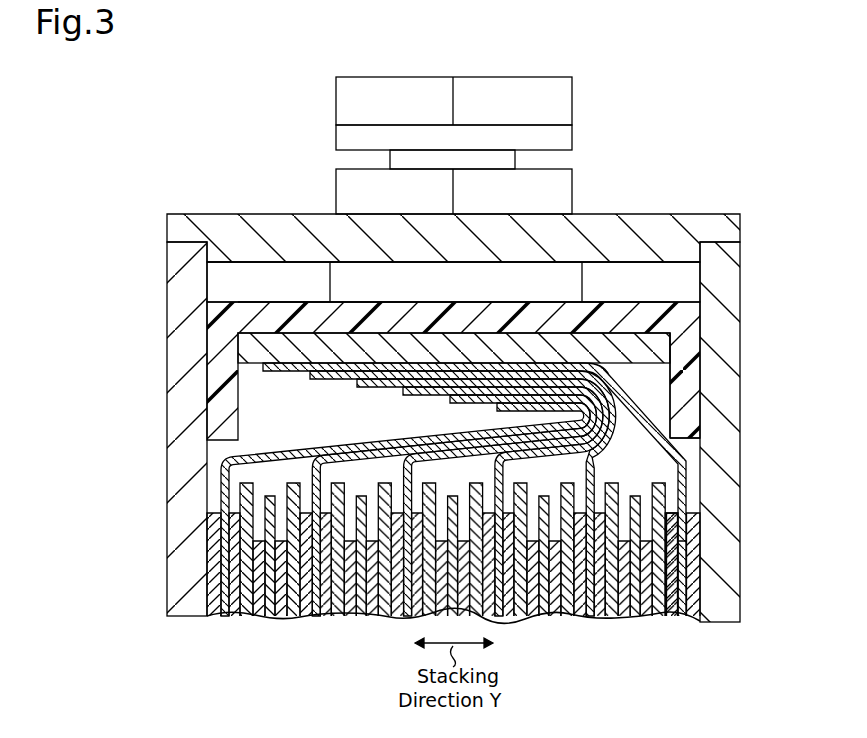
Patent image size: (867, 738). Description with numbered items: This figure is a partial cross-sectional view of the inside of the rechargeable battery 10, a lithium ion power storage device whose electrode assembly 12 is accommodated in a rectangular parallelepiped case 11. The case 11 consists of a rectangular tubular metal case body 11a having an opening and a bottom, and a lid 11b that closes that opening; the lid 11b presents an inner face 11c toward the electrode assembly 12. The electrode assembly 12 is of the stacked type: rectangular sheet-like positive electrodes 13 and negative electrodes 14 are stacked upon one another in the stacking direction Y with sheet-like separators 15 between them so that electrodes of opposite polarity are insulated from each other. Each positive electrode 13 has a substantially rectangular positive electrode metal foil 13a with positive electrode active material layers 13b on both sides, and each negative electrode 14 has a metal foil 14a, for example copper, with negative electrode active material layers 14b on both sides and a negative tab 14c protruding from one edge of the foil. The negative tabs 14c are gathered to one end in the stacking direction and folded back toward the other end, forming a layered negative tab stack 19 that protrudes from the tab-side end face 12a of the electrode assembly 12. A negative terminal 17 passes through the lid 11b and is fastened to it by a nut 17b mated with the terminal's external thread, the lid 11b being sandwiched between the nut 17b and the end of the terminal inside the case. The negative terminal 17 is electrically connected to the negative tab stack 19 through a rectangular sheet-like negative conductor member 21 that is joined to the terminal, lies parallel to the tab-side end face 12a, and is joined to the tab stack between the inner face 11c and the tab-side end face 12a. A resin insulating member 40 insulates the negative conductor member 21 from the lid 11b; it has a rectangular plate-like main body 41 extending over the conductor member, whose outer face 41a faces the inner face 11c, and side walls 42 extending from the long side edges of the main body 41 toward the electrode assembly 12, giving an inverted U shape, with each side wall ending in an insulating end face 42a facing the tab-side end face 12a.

The rechargeable battery 10 is at (733, 188).
The case 11 is at (88, 217).
The case body 11a is at (168, 262).
The lid 11b is at (168, 225).
The inner face of the lid 11c is at (637, 262).
The electrode assembly 12 is at (204, 550).
The tab-side end face 12a is at (221, 483).
The positive electrode 13 is at (250, 587).
The positive electrode metal foil 13a is at (270, 616).
The positive electrode active material layer 13b is at (260, 616).
The negative electrode 14 is at (700, 578).
The negative electrode metal foil 14a is at (683, 618).
The negative electrode active material layer 14b is at (673, 618).
The negative tab 14c is at (331, 381).
The separator 15 is at (667, 493).
The negative terminal 17 is at (515, 157).
The nut 17b is at (572, 192).
The negative tab stack 19 is at (623, 379).
The negative conductor member 21 is at (626, 340).
The insulating member 40 is at (256, 302).
The main body 41 is at (436, 306).
The outer face 41a is at (359, 307).
The side wall 42 is at (692, 377).
The insulating end face 42a is at (700, 455).